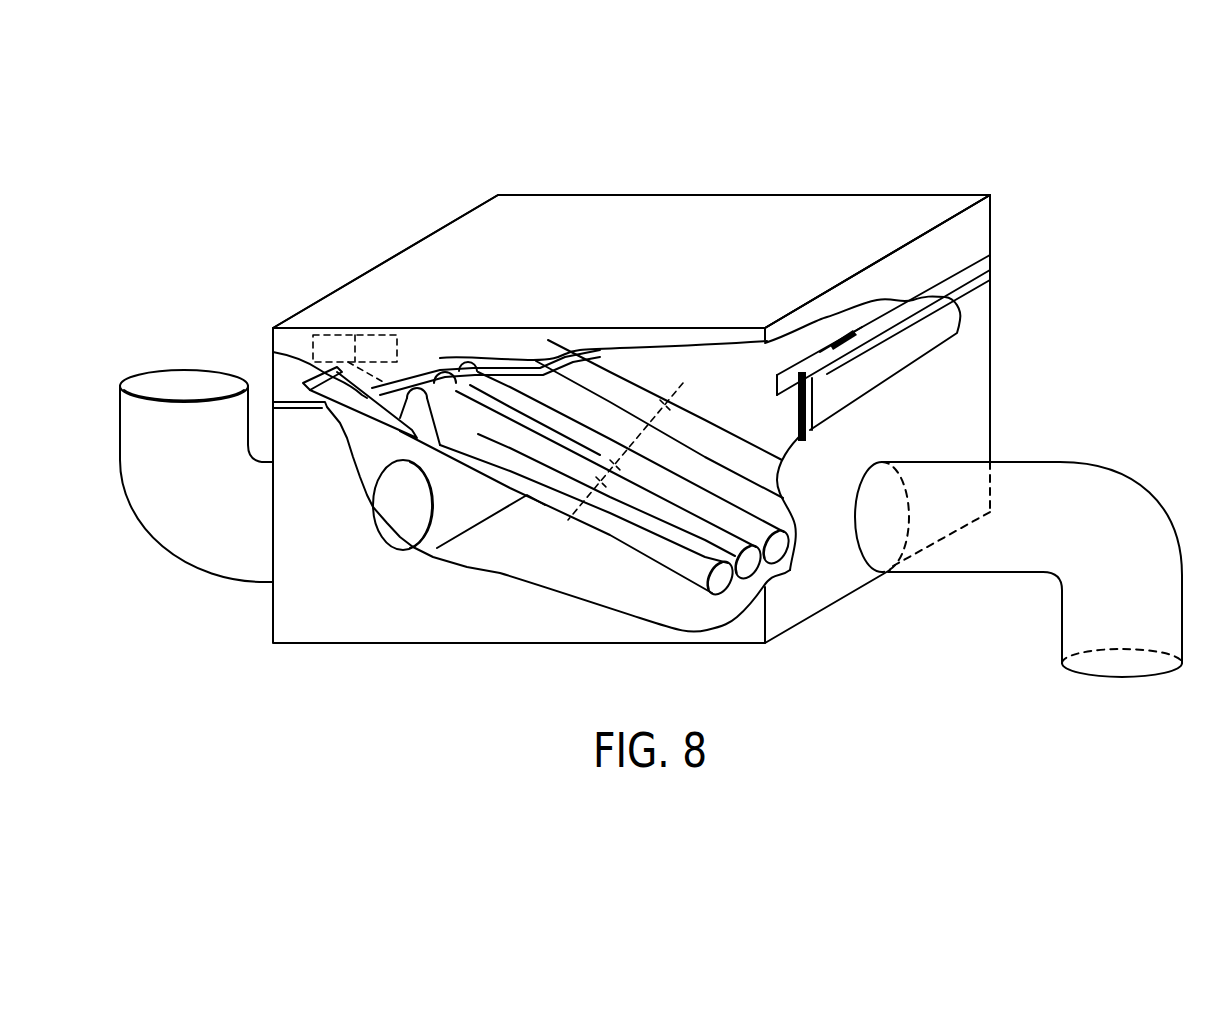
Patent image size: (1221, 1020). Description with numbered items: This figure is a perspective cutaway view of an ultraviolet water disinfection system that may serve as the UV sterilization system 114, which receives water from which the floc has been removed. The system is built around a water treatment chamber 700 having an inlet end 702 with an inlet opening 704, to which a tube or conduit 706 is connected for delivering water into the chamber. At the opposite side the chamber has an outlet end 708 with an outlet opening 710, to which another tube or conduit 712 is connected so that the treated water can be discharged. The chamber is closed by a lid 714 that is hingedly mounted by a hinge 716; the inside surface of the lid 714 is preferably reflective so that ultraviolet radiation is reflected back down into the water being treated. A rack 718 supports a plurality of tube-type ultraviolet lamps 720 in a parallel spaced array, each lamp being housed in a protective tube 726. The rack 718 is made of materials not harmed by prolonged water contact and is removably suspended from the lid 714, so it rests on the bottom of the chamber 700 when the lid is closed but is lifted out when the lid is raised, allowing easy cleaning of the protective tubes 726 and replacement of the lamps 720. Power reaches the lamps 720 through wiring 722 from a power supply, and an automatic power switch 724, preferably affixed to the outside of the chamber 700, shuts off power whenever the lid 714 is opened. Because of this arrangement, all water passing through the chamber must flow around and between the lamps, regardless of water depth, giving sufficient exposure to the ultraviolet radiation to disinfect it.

The UV sterilization system 114 is at (278, 160).
The water treatment chamber 700 is at (475, 632).
The inlet end 702 is at (356, 455).
The inlet opening 704 is at (420, 510).
The tube or conduit 706 is at (182, 502).
The outlet end 708 is at (910, 424).
The outlet opening 710 is at (878, 497).
The tube or conduit 712 is at (1078, 540).
The lid 714 is at (607, 271).
The hinge 716 is at (985, 283).
The rack 718 is at (812, 392).
The tube-type ultra-violet lamps 720 is at (623, 458).
The wiring 722 is at (342, 350).
The automatic power switch 724 is at (384, 346).
The protective tubes 726 is at (730, 478).